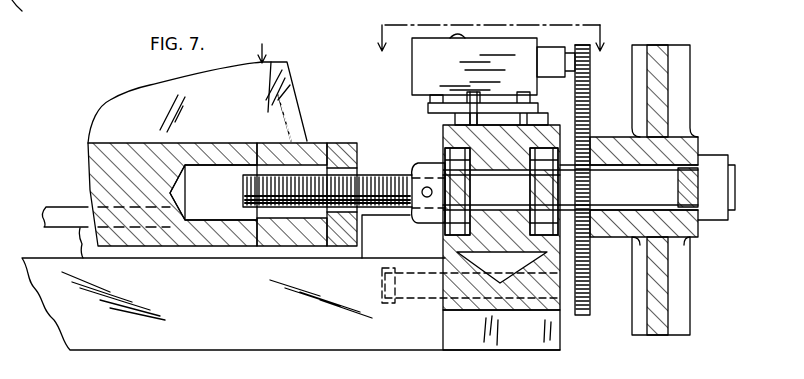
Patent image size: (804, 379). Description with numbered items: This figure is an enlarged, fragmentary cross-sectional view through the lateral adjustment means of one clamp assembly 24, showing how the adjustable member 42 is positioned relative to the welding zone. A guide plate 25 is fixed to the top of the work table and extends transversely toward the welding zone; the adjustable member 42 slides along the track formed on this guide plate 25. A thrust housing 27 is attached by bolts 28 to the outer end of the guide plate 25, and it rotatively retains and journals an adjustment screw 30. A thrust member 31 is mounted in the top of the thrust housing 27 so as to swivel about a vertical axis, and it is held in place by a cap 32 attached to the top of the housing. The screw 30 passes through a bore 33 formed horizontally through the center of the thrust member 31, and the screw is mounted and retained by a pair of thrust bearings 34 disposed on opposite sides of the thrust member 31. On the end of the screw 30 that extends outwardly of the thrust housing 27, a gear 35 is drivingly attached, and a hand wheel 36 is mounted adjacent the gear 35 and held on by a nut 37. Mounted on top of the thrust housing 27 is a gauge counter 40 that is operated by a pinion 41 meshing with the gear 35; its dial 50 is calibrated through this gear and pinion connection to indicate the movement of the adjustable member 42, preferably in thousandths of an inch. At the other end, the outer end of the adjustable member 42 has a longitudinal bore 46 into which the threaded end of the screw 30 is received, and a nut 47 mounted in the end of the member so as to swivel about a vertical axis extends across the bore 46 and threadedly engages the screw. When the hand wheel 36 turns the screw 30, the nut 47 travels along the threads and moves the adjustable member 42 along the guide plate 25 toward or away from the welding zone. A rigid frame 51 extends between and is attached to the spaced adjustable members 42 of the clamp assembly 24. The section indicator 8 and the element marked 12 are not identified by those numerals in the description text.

The section line 8- 8 is at (489, 29).
The frame 12 is at (28, 14).
The clamp assembly 24 is at (269, 43).
The guide plate 25 is at (206, 340).
The thrust housing 27 is at (477, 338).
The bolts 28 is at (432, 284).
The adjustment screw 30 is at (389, 210).
The thrust member 31 is at (445, 250).
The cap 32 is at (442, 122).
The bore 33 is at (467, 205).
The thrust bearings 34 is at (545, 195).
The gear 35 is at (590, 115).
The hand wheel 36 is at (668, 316).
The nut 37 is at (712, 152).
The gauge counter 40 is at (420, 65).
The pinion 41 is at (588, 47).
The adjustable member 42 is at (132, 152).
The longitudinal bore 46 is at (213, 192).
The nut 47 is at (268, 142).
The dial 50 is at (460, 38).
The rigid frame 51 is at (138, 92).